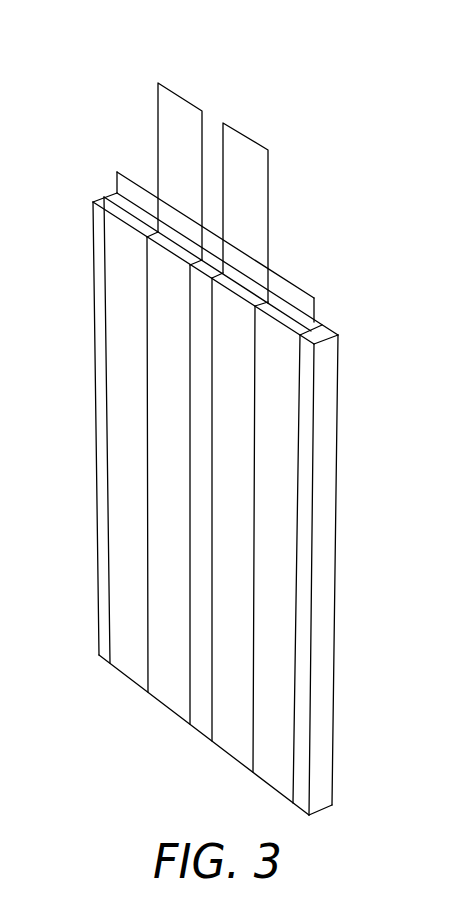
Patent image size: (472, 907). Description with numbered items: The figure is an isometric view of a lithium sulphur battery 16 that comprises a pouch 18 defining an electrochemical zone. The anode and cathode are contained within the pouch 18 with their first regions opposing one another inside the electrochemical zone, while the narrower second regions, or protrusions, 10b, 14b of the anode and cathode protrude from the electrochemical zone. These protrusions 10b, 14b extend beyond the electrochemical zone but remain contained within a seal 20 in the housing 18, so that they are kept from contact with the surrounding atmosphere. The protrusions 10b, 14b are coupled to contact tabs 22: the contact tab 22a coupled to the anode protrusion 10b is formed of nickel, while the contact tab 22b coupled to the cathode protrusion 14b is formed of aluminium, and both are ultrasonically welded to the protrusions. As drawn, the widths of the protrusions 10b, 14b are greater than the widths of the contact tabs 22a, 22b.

The second region 10b is at (116, 186).
The second region 14b is at (293, 283).
The lithium sulphur battery 16 is at (95, 453).
The pouch 18 is at (245, 523).
The seal 20 is at (338, 358).
The contact tabs 22 is at (243, 130).
The contact tab 22a is at (166, 133).
The contact tab 22b is at (258, 187).